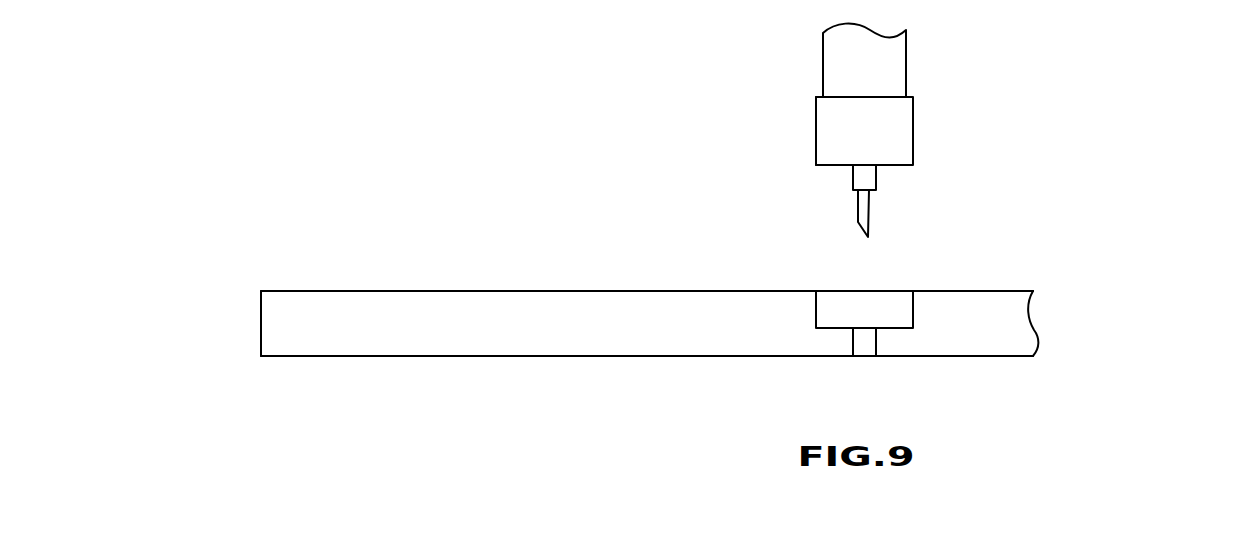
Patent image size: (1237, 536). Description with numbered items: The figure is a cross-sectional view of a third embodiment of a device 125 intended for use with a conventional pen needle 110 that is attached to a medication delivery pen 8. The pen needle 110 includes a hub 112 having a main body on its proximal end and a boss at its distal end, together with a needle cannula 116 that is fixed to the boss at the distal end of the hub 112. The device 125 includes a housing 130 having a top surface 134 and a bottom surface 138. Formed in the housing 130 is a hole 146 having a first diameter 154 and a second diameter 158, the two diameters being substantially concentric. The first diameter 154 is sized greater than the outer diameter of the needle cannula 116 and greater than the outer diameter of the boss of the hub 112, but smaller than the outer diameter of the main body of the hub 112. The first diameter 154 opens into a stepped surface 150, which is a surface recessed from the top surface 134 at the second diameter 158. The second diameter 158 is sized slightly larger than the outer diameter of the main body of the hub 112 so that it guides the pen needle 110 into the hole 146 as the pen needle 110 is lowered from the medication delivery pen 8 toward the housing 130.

The device 125 is at (202, 226).
The housing 130 is at (261, 328).
The top surface 134 is at (386, 290).
The bottom surface 138 is at (303, 357).
The hole 146 is at (876, 292).
The stepped surface 150 is at (893, 330).
The first diameter 154 is at (851, 340).
The second diameter 158 is at (913, 310).
The pen needle 110 is at (913, 105).
The hub 112 is at (808, 110).
The needle cannula 116 is at (857, 216).
The medication delivery pen 8 is at (906, 64).